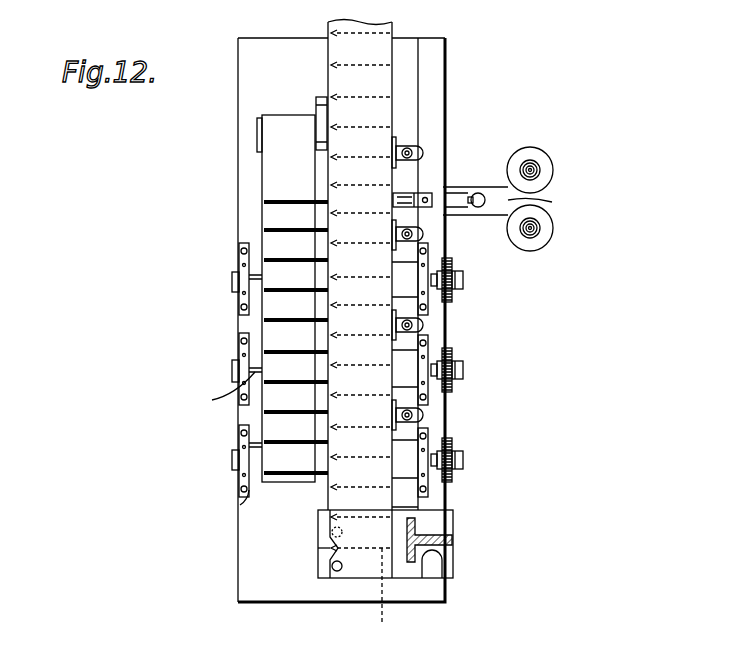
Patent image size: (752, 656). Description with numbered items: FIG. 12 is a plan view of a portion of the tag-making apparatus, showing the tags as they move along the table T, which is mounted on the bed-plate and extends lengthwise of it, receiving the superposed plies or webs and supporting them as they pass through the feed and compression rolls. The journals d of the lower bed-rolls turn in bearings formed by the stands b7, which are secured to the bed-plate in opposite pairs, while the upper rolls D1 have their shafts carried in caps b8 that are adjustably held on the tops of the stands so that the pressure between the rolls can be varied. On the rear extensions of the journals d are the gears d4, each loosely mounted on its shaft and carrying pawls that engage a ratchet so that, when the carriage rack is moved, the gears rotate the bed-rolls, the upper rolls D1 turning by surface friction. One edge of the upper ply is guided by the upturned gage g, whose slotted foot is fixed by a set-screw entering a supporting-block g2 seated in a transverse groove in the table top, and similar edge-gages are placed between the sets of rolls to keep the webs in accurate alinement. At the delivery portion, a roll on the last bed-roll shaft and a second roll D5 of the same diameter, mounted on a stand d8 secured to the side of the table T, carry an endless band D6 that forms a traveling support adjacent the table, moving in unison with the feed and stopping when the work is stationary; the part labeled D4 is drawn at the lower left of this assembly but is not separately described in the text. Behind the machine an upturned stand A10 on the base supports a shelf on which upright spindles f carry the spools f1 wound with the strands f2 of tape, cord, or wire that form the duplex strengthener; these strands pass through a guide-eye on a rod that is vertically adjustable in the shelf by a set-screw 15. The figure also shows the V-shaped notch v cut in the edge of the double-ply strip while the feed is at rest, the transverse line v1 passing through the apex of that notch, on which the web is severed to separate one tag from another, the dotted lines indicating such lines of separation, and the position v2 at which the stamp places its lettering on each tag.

The belt b is at (392, 22).
The table T is at (330, 62).
The endless band D6 is at (262, 170).
The second roll D5 is at (262, 128).
The bracket arm D4 is at (250, 490).
The upper rolls D1 is at (407, 472).
The stand d8 is at (321, 136).
The gear d4 is at (452, 350).
The journal d is at (470, 404).
The strengthener material f2 is at (294, 446).
The upright spindles f is at (532, 170).
The spools f1 is at (524, 148).
The stands b7 is at (238, 251).
The caps b8 is at (494, 489).
The upturned gage g is at (397, 137).
The supporting-block g2 is at (412, 151).
The set-screw 15 is at (475, 194).
The upturned stand A10 is at (472, 210).
The V-shaped notch v is at (326, 548).
The line of severance v1 is at (348, 494).
The stamp position v2 is at (330, 536).